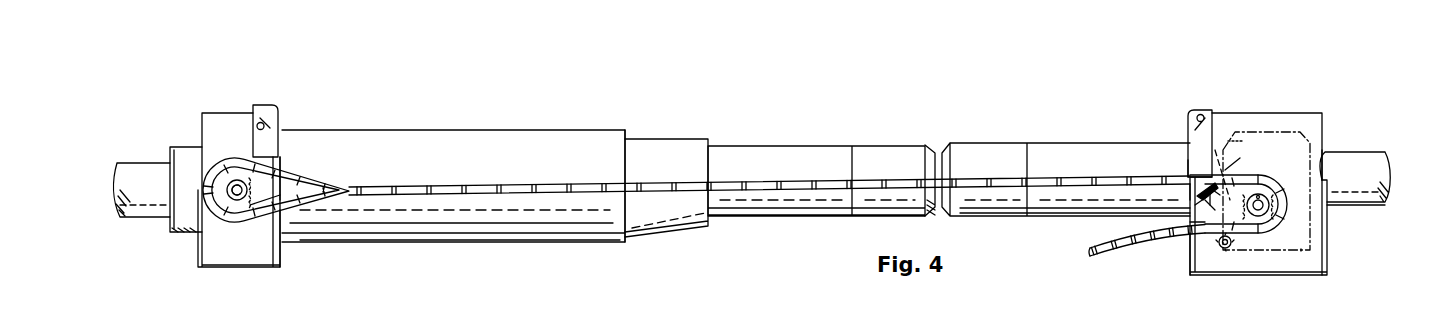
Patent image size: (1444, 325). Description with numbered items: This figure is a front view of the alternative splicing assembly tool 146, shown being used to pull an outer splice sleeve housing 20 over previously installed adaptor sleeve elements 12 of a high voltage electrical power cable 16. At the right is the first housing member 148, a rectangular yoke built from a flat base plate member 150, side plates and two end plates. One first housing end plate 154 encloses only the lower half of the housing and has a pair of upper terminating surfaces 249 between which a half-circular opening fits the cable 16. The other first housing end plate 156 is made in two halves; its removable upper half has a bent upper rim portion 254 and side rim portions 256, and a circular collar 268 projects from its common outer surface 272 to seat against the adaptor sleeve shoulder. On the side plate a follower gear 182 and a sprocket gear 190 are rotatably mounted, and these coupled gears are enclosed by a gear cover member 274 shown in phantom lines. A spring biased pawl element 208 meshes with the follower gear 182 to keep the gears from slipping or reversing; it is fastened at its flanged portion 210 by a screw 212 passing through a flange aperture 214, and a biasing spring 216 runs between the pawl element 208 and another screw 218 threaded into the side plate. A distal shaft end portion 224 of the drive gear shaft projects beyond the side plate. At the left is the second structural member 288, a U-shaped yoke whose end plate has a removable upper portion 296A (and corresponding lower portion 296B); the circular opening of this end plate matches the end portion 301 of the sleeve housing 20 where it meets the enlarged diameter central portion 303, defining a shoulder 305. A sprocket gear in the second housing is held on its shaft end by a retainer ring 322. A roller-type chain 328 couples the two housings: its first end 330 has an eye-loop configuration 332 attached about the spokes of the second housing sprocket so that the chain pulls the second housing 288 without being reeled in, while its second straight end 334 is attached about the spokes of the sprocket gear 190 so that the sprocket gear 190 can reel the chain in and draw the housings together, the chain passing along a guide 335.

The adaptor sleeve element 12 is at (758, 140).
The high voltage electrical power cable 16 is at (145, 160).
The outer splice sleeve housing 20 is at (528, 128).
The splicing assembly tool 146 is at (813, 116).
The first housing member 148 is at (1275, 100).
The base plate member 150 is at (1273, 277).
The first housing end plate 154 is at (1330, 259).
The first housing end plate 156 is at (1192, 264).
The follower gear 182 is at (1300, 213).
The sprocket gear 190 is at (1254, 218).
The spring biased pawl element 208 is at (1203, 196).
The flanged portion 210 is at (1193, 220).
The screw 212 is at (1200, 205).
The flange aperture 214 is at (1197, 228).
The biasing spring 216 is at (1225, 202).
The screw 218 is at (1257, 195).
The distal shaft end portion 224 is at (1222, 250).
The upper terminating surface 249 is at (1322, 150).
The upper rim portion 254 is at (1200, 109).
The side rim portion 256 is at (1220, 157).
The circular-shaped collar 268 is at (1188, 193).
The outer surface 272 is at (1183, 177).
The gear cover member 274 is at (1285, 127).
The second structural member 288 is at (225, 108).
The upper portion of second housing end plate 296A is at (282, 163).
The lower side plate 296B is at (282, 252).
The end portion of outer splice sleeve housing 301 is at (673, 157).
The enlarged diameter central portion 303 is at (593, 228).
The shoulder 305 is at (626, 133).
The retainer ring 322 is at (231, 189).
The roller-type chain 328 is at (468, 186).
The first end 330 is at (233, 217).
The eye-loop configuration 332 is at (313, 175).
The second straight end 334 is at (1090, 251).
The lower chain guide 335 is at (262, 194).